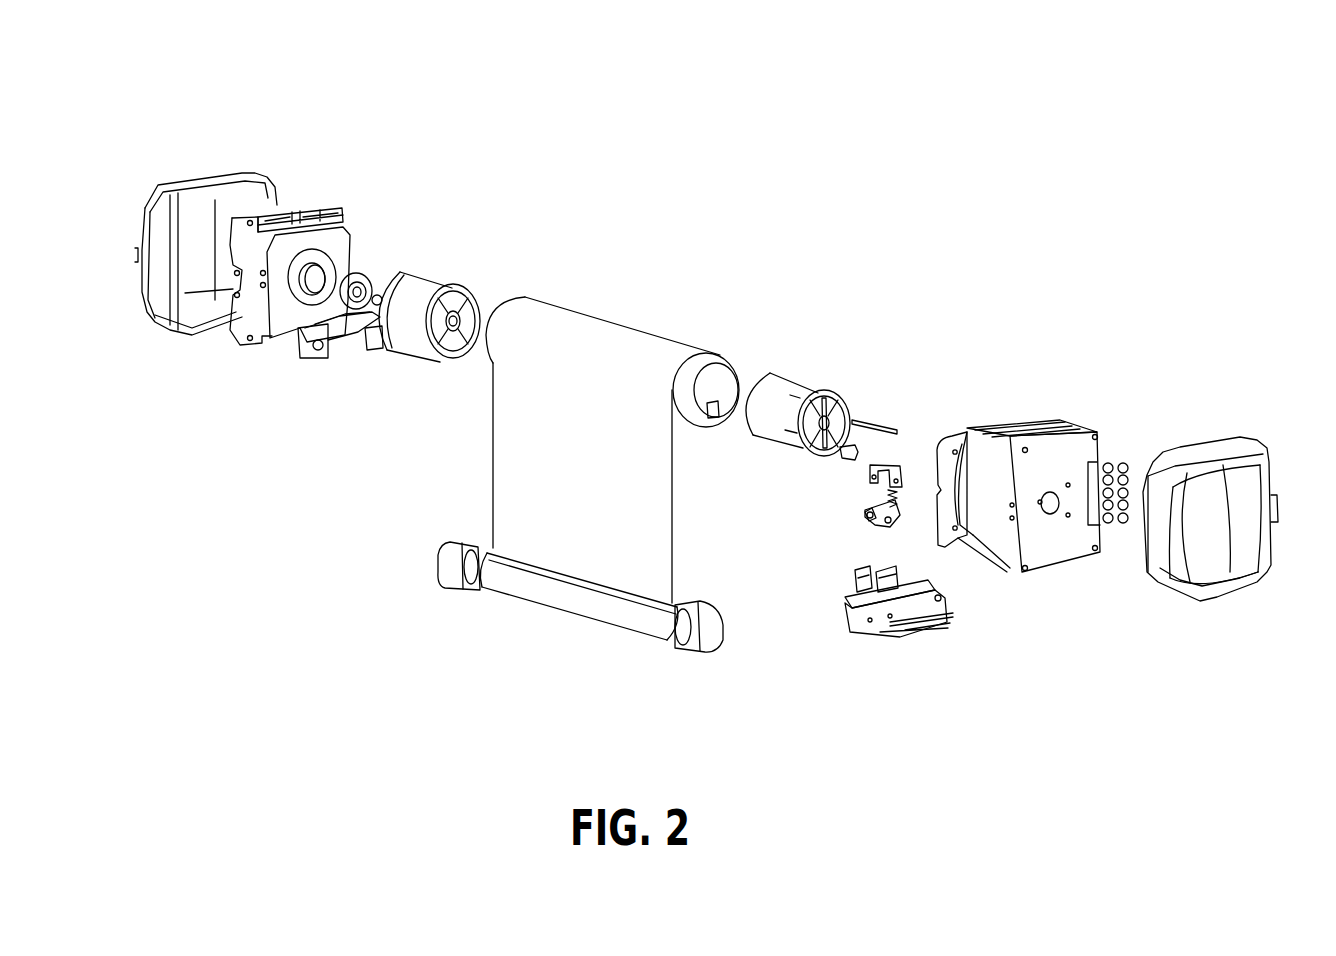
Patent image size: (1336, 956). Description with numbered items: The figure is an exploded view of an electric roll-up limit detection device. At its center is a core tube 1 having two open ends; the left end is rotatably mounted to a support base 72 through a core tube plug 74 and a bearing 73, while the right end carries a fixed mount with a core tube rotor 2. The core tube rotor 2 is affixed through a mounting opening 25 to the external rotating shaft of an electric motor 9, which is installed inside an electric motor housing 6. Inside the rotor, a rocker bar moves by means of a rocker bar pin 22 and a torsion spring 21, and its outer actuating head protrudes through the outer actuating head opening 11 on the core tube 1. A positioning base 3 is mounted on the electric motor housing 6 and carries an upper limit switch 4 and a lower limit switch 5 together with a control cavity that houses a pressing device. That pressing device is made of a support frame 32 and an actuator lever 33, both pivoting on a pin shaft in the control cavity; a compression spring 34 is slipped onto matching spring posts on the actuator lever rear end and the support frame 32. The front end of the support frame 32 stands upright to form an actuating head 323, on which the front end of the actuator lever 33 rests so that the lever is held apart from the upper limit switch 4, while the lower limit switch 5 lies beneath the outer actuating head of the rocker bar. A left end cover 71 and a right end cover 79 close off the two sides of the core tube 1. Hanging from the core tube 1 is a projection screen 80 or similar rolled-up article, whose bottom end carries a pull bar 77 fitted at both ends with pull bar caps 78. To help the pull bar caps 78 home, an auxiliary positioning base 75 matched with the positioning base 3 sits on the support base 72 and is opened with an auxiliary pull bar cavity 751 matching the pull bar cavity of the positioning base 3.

The core tube 1 is at (497, 313).
The outer actuating head opening 11 is at (703, 403).
The core tube rotor 2 is at (783, 402).
The torsion spring 21 is at (853, 452).
The rocker bar pin 22 is at (870, 422).
The mounting opening 25 is at (830, 402).
The positioning base 3 is at (867, 617).
The support frame 32 is at (880, 510).
The actuating head 323 is at (868, 515).
The actuator lever 33 is at (890, 477).
The compression spring 34 is at (888, 505).
The upper limit switch 4 is at (857, 598).
The lower limit switch 5 is at (860, 577).
The electric motor housing 6 is at (1060, 470).
The electric motor 9 is at (1005, 468).
The left end cover 71 is at (233, 205).
The support base 72 is at (300, 222).
The bearing 73 is at (357, 282).
The core tube plug 74 is at (405, 292).
The auxiliary positioning base 75 is at (350, 342).
The auxiliary pull bar cavity 751 is at (367, 343).
The pull bar 77 is at (538, 590).
The pull bar caps 78 is at (455, 565).
The right end cover 79 is at (1193, 500).
The projection screen 80 is at (617, 543).